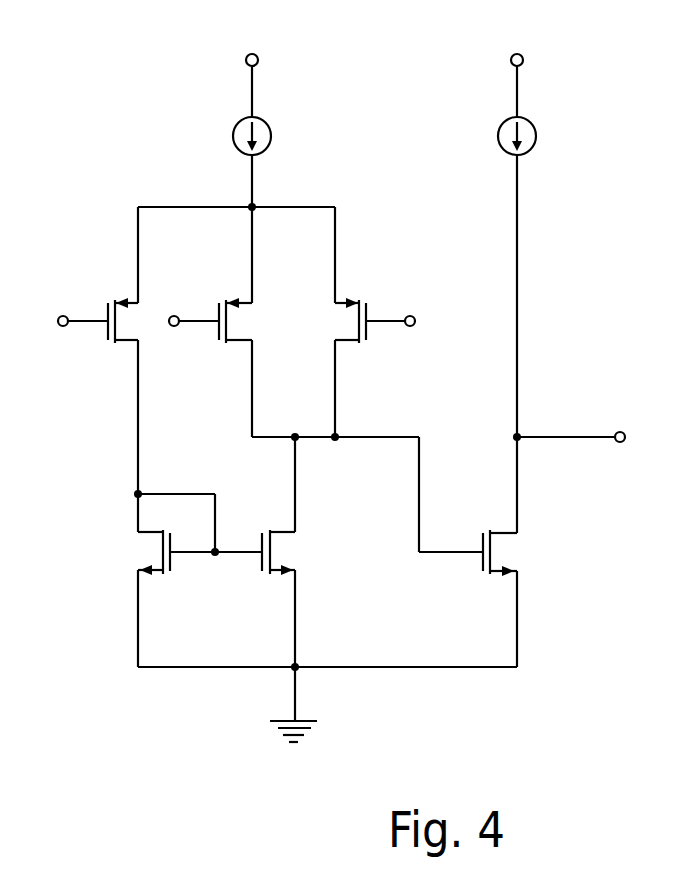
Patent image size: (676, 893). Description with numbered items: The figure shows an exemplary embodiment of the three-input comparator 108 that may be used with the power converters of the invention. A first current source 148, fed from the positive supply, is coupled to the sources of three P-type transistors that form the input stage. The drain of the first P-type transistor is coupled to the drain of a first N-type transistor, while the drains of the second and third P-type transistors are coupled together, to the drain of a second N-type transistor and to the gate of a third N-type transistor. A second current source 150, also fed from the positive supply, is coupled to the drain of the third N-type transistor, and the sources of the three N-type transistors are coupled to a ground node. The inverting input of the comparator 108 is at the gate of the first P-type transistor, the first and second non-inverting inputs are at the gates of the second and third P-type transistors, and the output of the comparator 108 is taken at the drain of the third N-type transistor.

The three-input comparator 108 is at (81, 130).
The current source 148 is at (268, 128).
The current source 150 is at (533, 128).